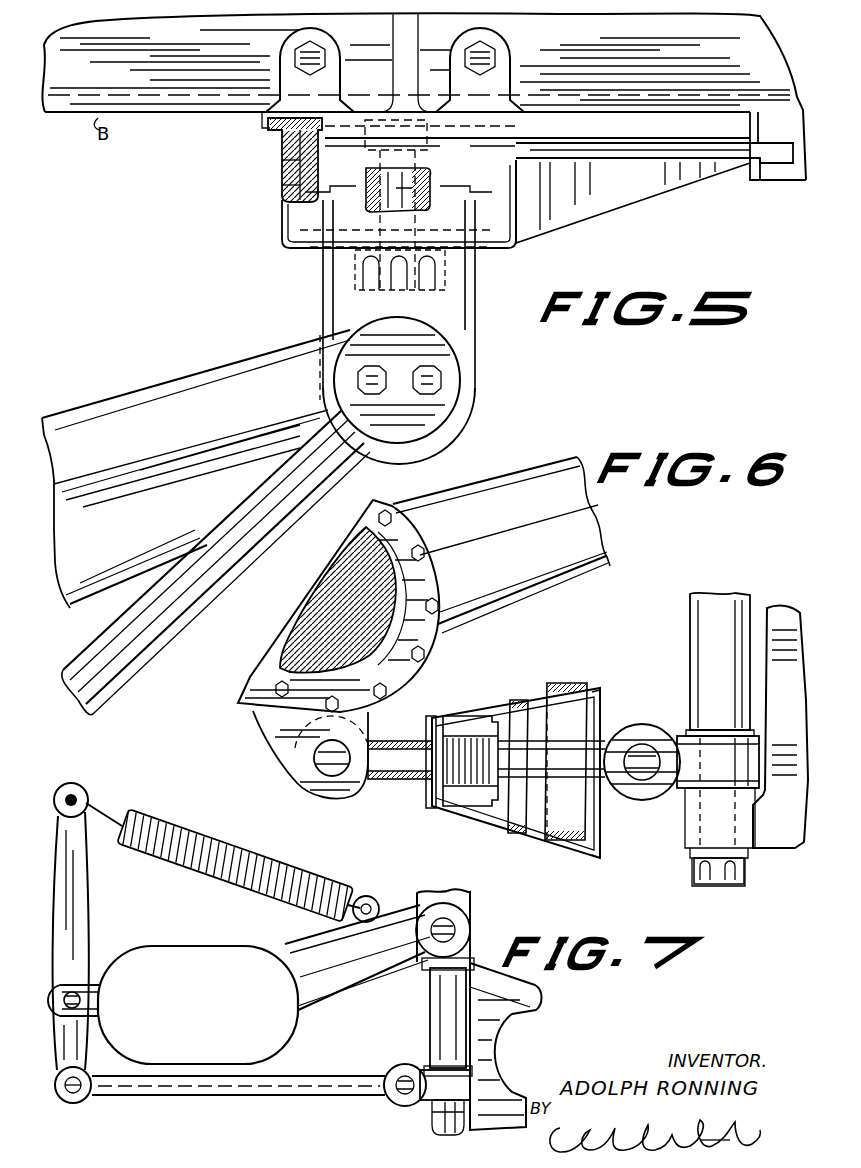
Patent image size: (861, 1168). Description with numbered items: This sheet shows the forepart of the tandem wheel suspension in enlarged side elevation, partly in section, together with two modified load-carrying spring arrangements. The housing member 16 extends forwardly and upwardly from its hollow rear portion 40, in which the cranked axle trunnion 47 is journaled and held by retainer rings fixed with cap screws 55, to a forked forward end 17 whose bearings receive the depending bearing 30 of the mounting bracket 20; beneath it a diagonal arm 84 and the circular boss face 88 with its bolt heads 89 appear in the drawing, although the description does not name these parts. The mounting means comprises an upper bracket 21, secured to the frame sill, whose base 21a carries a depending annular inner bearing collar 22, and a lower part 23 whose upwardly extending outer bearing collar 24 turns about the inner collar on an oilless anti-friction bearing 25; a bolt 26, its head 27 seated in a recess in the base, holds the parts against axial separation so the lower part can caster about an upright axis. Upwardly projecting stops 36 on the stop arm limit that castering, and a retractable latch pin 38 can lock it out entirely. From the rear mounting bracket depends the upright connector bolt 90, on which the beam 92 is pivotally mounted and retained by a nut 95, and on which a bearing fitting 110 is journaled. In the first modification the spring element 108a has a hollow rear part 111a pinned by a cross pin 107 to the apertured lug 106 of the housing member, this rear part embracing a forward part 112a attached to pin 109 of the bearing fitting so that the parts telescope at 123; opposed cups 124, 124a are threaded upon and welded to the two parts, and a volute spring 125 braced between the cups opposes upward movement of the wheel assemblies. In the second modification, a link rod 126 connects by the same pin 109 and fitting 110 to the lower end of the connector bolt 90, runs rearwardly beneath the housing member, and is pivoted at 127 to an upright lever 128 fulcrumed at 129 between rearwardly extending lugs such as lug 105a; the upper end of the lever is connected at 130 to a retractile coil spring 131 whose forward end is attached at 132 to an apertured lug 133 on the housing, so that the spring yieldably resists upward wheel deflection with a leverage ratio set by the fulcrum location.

In FIG. 5, the housing member 16 is at (178, 384).
In FIG. 6, the housing member 16 is at (615, 550).
In FIG. 7, the housing member 16 is at (360, 1000).
In FIG. 5, the forked forward end 17 is at (137, 536).
In FIG. 5, the mounting bracket 20 is at (258, 136).
In FIG. 5, the upper bracket 21 is at (295, 42).
In FIG. 5, the base 21a is at (260, 118).
In FIG. 5, the inner bearing collar 22 is at (320, 165).
In FIG. 5, the lower part 23 is at (510, 250).
In FIG. 5, the outer bearing collar 24 is at (285, 188).
In FIG. 5, the anti-friction bearing 25 is at (282, 165).
In FIG. 5, the bolt 26 is at (425, 185).
In FIG. 5, the head 27 is at (440, 115).
In FIG. 5, the depending bearing 30 is at (470, 440).
In FIG. 5, the stop 36 is at (648, 146).
In FIG. 5, the retractable latch pin 38 is at (448, 292).
In FIG. 5, the diagonal arm 84 is at (172, 636).
In FIG. 5, the boss face 88 is at (455, 355).
In FIG. 5, the bolt heads 89 is at (416, 386).
In FIG. 6, the trunnion 47 is at (306, 617).
In FIG. 6, the cap screw 55 is at (432, 592).
In FIG. 6, the apertured lug 106 is at (282, 740).
In FIG. 6, the cross pin 107 is at (326, 760).
In FIG. 6, the rear part 111a is at (385, 782).
In FIG. 6, the telescoping relation 123 is at (424, 730).
In FIG. 6, the cup 124 is at (448, 808).
In FIG. 6, the cup 124a is at (600, 708).
In FIG. 6, the volute spring 125 is at (516, 700).
In FIG. 6, the modified spring element 108a is at (520, 850).
In FIG. 6, the forward part 112a is at (618, 748).
In FIG. 6, the cross pin 109 is at (645, 772).
In FIG. 7, the cross pin 109 is at (395, 1100).
In FIG. 6, the bearing fitting 110 is at (718, 762).
In FIG. 7, the bearing fitting 110 is at (426, 1102).
In FIG. 6, the connector bolt 90 is at (688, 638).
In FIG. 7, the connector bolt 90 is at (432, 1032).
In FIG. 6, the beam 92 is at (788, 610).
In FIG. 7, the beam 92 is at (537, 996).
In FIG. 6, the nut 95 is at (742, 872).
In FIG. 7, the hollow rear portion 40 is at (190, 956).
In FIG. 7, the lug 105a is at (100, 1000).
In FIG. 7, the link rod 126 is at (278, 1098).
In FIG. 7, the pivot 127 is at (74, 1102).
In FIG. 7, the upright lever 128 is at (56, 1052).
In FIG. 7, the fulcrum 129 is at (62, 1005).
In FIG. 7, the spring connection 130 is at (88, 800).
In FIG. 7, the retractile coil spring 131 is at (210, 845).
In FIG. 7, the forward spring connection 132 is at (352, 912).
In FIG. 7, the apertured lug 133 is at (370, 900).